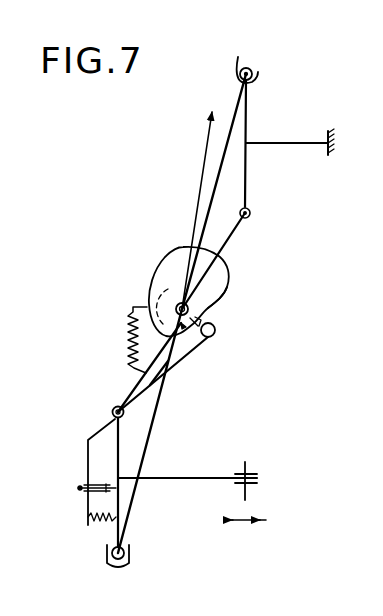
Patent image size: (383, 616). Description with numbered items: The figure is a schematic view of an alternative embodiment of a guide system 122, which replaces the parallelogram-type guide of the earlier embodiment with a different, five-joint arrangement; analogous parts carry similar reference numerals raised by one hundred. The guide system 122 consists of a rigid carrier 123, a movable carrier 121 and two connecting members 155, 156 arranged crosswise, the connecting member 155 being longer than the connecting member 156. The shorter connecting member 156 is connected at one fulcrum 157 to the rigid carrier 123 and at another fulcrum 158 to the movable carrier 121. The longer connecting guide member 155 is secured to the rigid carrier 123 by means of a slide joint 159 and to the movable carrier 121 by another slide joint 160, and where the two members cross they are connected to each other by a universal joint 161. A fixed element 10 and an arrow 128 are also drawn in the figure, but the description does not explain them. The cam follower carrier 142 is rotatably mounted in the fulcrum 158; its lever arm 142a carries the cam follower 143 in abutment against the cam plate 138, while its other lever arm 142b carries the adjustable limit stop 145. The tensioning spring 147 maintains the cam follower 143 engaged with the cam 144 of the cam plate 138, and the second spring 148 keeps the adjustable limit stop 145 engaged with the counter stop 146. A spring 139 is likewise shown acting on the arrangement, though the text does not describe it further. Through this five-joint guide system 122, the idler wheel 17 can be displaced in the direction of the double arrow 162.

The fixed frame link 10 is at (290, 143).
The idler wheel 17 is at (247, 464).
The movable carrier 121 is at (120, 447).
The guide system 122 is at (125, 323).
The rigid carrier 123 is at (247, 160).
The direction arrow 128 is at (204, 128).
The cam plate 138 is at (218, 272).
The spring 139 is at (130, 348).
The cam follower carrier 142 is at (186, 354).
The lever arm 142a is at (153, 407).
The lever arm 142b is at (88, 470).
The cam follower 143 is at (216, 333).
The cam 144 is at (229, 282).
The adjustable limit stop 145 is at (78, 490).
The counter stop 146 is at (120, 490).
The tensioning spring 147 is at (207, 318).
The second spring 148 is at (97, 520).
The connecting member 155 is at (207, 207).
The connecting member 156 is at (232, 236).
The fulcrum 157 is at (250, 214).
The fulcrum 158 is at (112, 412).
The slide joint 159 is at (258, 72).
The slide joint 160 is at (129, 556).
The universal joint 161 is at (145, 303).
The double arrow 162 is at (247, 522).